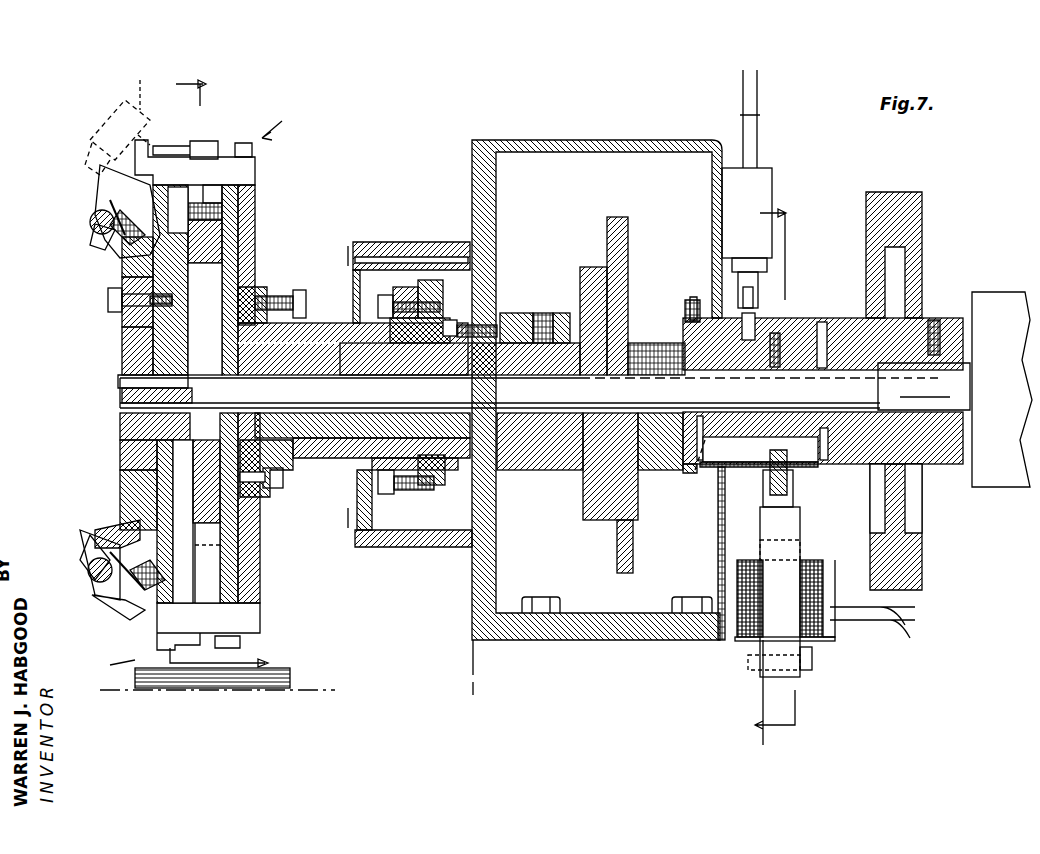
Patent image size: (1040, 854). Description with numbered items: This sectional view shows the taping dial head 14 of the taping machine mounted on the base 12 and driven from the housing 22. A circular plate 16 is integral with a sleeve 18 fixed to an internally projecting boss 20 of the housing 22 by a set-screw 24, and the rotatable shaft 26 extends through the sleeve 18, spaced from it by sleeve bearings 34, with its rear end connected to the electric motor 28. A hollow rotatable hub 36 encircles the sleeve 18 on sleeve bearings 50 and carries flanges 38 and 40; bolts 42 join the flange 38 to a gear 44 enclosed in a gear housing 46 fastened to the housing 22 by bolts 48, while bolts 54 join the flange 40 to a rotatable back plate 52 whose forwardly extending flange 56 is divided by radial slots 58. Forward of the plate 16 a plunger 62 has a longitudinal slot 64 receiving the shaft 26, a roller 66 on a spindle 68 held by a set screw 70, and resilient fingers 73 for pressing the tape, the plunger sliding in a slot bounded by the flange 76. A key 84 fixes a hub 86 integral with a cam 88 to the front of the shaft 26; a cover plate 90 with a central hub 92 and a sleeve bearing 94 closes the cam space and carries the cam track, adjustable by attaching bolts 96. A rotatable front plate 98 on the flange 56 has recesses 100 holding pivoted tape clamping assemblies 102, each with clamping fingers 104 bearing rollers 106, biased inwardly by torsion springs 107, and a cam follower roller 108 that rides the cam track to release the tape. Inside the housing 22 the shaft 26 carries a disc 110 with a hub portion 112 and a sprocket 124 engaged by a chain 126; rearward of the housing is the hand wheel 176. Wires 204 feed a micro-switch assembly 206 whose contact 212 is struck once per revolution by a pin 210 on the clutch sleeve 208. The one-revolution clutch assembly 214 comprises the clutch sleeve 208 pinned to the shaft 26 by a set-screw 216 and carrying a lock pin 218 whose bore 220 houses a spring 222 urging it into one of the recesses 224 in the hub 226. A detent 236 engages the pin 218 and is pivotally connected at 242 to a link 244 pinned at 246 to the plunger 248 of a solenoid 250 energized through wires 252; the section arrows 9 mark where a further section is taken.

The section line 9 is at (226, 373).
The base 12 is at (761, 474).
The taping dial head 14 is at (283, 126).
The circular plate 16 is at (222, 238).
The sleeve 18 is at (330, 440).
The internally projecting boss 20 is at (523, 313).
The housing 22 is at (600, 140).
The set-screw 24 is at (550, 313).
The rotatable shaft 26 is at (340, 325).
The electric motor 28 is at (1002, 292).
The sleeve bearings 34 is at (535, 470).
The hollow rotatable hub 36 is at (300, 305).
The flange 38 is at (408, 287).
The flange 40 is at (290, 292).
The screws or bolts 42 is at (400, 494).
The gear 44 is at (432, 278).
The gear housing 46 is at (425, 547).
The screws or bolts 48 is at (360, 547).
The sleeve bearings 50 is at (545, 386).
The back plate 52 is at (256, 192).
The screws or bolts 54 is at (275, 497).
The lateral flange 56 is at (248, 634).
The radial slots 58 is at (248, 606).
The plunger 62 is at (240, 232).
The longitudinal slot 64 is at (238, 262).
The roller 66 is at (178, 198).
The spindle 68 is at (205, 235).
The set screw 70 is at (210, 192).
The resilient fingers 73 is at (220, 570).
The forwardly extending flange 76 is at (135, 610).
The key 84 is at (140, 372).
The hub 86 is at (125, 422).
The cam 88 is at (140, 282).
The cover plate 90 is at (125, 488).
The central hub 92 is at (122, 338).
The sleeve bearing 94 is at (120, 452).
The attaching bolts 96 is at (108, 300).
The rotatable front plate 98 is at (100, 520).
The recesses 100 is at (115, 170).
The tape clamping assembly 102 is at (92, 206).
The clamping fingers 104 is at (145, 662).
The rollers 106 is at (210, 670).
The torsion springs 107 is at (100, 582).
The cam follower roller 108 is at (145, 590).
The disc 110 is at (628, 252).
The hub portion 112 is at (592, 267).
The sprocket 124 is at (688, 320).
The chain 126 is at (692, 297).
The hand wheel 176 is at (922, 198).
The wires 204 is at (762, 118).
The micro-switch assembly 206 is at (772, 182).
The clutch sleeve 208 is at (822, 322).
The pin 210 is at (757, 318).
The contact 212 is at (757, 285).
The one-revolution clutch assembly 214 is at (750, 682).
The set-screw 216 is at (782, 332).
The lock pin 218 is at (820, 478).
The bore 220 is at (718, 505).
The spring 222 is at (700, 484).
The recesses 224 is at (848, 466).
The hub 226 is at (932, 318).
The detent 236 is at (718, 538).
The pivotal connection 242 is at (800, 522).
The link 244 is at (748, 531).
The pin connection 246 is at (812, 531).
The plunger 248 is at (760, 643).
The solenoid 250 is at (828, 640).
The wires 252 is at (892, 626).